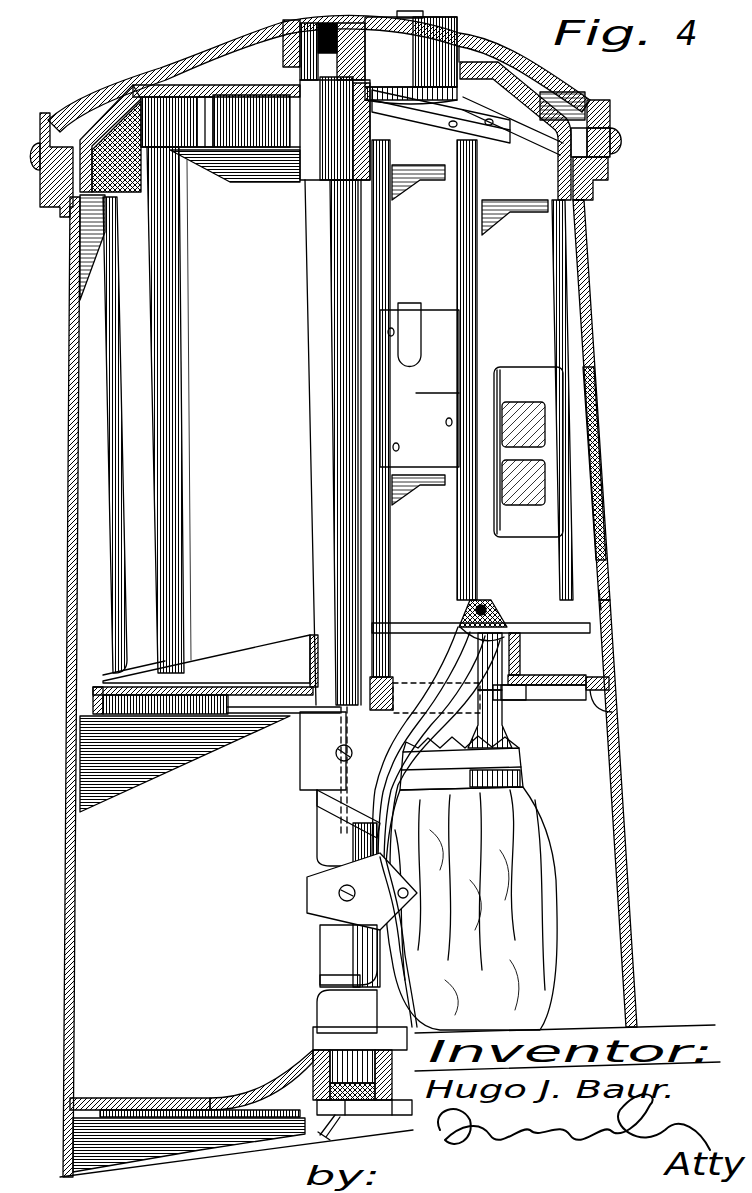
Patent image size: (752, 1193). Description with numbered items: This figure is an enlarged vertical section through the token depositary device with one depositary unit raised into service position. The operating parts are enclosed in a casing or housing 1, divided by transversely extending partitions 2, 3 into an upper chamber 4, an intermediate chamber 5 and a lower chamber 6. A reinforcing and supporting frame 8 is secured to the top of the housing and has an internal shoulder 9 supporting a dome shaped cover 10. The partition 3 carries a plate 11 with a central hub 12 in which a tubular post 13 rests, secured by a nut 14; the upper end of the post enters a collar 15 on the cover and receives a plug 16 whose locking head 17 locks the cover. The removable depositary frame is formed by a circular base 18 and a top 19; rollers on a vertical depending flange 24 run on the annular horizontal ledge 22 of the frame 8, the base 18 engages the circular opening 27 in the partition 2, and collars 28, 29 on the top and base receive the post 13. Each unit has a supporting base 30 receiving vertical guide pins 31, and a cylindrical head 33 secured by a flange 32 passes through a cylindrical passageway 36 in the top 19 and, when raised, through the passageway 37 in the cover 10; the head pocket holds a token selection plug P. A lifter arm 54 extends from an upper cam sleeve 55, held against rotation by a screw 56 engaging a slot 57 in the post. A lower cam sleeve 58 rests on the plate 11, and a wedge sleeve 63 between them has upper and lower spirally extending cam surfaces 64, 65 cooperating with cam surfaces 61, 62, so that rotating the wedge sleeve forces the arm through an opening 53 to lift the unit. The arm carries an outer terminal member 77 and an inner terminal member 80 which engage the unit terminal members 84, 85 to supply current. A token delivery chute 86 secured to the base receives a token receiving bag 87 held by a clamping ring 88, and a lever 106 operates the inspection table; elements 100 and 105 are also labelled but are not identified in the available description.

The casing or housing 1 is at (624, 738).
The partition 2 is at (598, 680).
The partition 3 is at (100, 1099).
The upper chamber 4 is at (584, 302).
The intermediate chamber 5 is at (605, 848).
The lower chamber 6 is at (66, 1140).
The reinforcing and supporting frame 8 is at (610, 166).
The internal shoulder 9 is at (618, 128).
The dome shaped cover 10 is at (598, 92).
The plate 11 is at (232, 1094).
The central hub 12 is at (313, 1065).
The post 13 is at (307, 373).
The nut 14 is at (380, 1112).
The collar 15 is at (280, 40).
The plug 16 is at (265, 21).
The locking head 17 is at (362, 52).
The circular base 18 is at (565, 673).
The top 19 is at (512, 98).
The annular horizontal ledge 22 is at (596, 181).
The vertical depending flange 24 is at (586, 222).
The circular opening 27 is at (614, 713).
The collar 28 is at (282, 148).
The collar 29 is at (210, 661).
The supporting base 30 is at (606, 600).
The vertical guide pins 31 is at (521, 647).
The flange 32 is at (445, 128).
The cylindrical head 33 is at (457, 34).
The cylindrical passageway 36 is at (477, 93).
The passageway 37 is at (463, 56).
The opening 53 is at (410, 680).
The lifter arm 54 is at (500, 700).
The cam sleeve 55 is at (316, 806).
The screw 56 is at (336, 755).
The slot 57 is at (313, 702).
The lower cam sleeve 58 is at (320, 1010).
The spirally extending cam surface 61 is at (320, 800).
The spirally extending cam surface 62 is at (365, 975).
The wedge sleeve 63 is at (385, 928).
The upper spirally extending cam surface 64 is at (338, 843).
The lower spirally extending cam surface 65 is at (352, 950).
The outer terminal member 77 is at (476, 628).
The inner terminal member 80 is at (510, 625).
The terminal member 84 is at (495, 603).
The inner terminal member 85 is at (462, 612).
The token delivery chute 86 is at (512, 740).
The token receiving bag 87 is at (550, 896).
The clamping ring 88 is at (526, 780).
The switch 100 is at (513, 430).
The contact strip 105 is at (606, 497).
The lever 106 is at (378, 580).
The token selection plug P is at (406, 42).